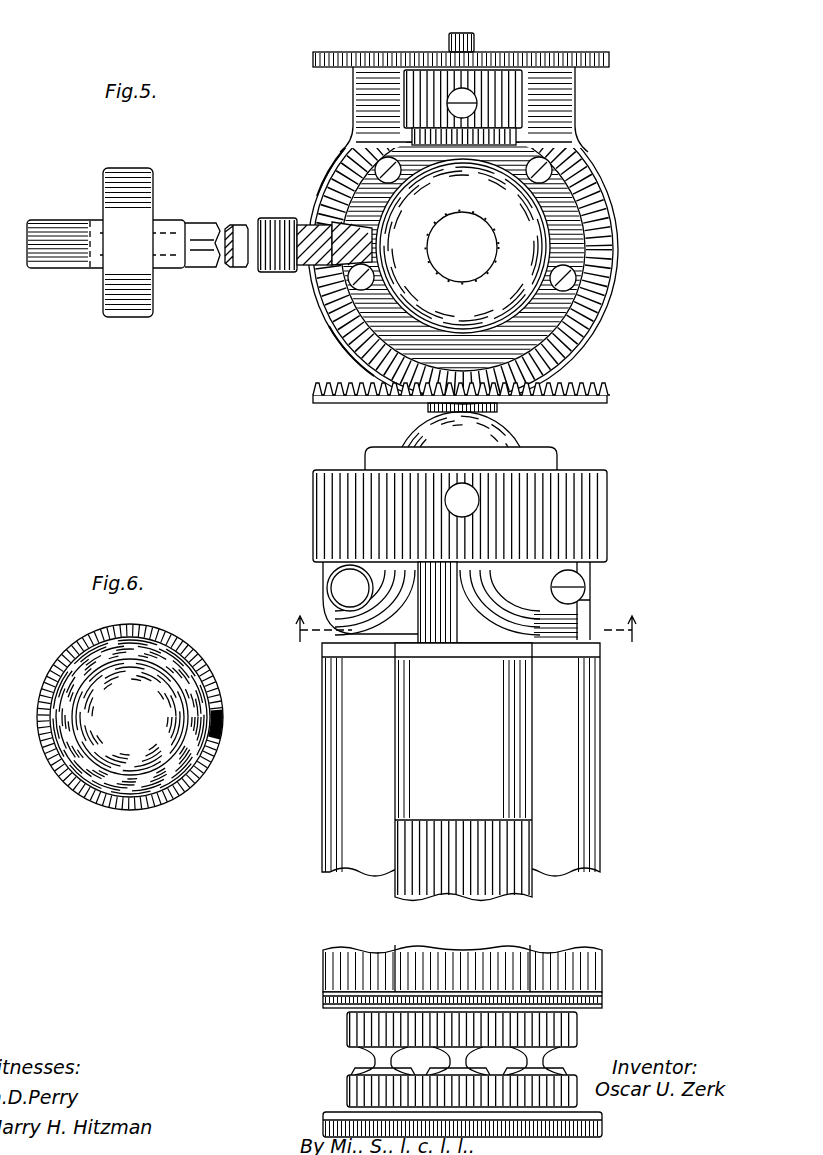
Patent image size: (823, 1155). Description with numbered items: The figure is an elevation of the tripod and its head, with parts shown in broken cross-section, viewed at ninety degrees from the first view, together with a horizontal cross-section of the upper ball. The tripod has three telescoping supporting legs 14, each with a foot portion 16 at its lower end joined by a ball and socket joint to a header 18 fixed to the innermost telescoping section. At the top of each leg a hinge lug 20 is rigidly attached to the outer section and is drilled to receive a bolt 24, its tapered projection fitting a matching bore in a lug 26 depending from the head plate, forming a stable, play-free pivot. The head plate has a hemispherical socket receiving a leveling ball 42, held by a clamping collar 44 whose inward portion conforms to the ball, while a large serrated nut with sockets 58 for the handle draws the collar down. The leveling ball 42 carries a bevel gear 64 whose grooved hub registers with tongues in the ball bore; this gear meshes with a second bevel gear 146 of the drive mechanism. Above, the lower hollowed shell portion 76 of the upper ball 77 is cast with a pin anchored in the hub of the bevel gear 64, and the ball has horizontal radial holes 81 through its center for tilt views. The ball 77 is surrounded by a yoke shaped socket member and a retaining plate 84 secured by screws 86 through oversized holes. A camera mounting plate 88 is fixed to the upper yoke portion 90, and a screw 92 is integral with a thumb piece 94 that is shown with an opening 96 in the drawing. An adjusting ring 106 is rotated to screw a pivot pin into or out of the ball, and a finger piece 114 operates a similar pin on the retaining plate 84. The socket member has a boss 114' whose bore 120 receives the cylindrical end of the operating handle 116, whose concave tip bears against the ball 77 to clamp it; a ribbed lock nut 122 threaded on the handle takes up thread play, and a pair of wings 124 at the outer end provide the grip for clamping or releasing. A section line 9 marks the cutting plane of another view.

In FIG. 5, the telescoping supporting leg 14 is at (588, 766).
In FIG. 5, the foot portion 16 is at (583, 1112).
In FIG. 5, the header 18 is at (356, 1027).
In FIG. 5, the hinge lug 20 is at (425, 614).
In FIG. 5, the bolt 24 is at (586, 583).
In FIG. 5, the lug 26 is at (382, 576).
In FIG. 5, the leveling ball 42 is at (503, 440).
In FIG. 5, the clamping collar 44 is at (552, 462).
In FIG. 5, the socket 58 is at (455, 496).
In FIG. 5, the bevel gear 64 is at (607, 401).
In FIG. 6, the lower hollowed shell portion 76 is at (222, 733).
In FIG. 5, the upper ball 77 is at (362, 247).
In FIG. 6, the radial hole 81 is at (222, 722).
In FIG. 5, the retaining plate 84 is at (606, 212).
In FIG. 5, the screw 86 is at (578, 280).
In FIG. 5, the camera mounting plate 88 is at (578, 58).
In FIG. 5, the upper yoke portion 90 is at (566, 96).
In FIG. 5, the screw 92 is at (474, 45).
In FIG. 5, the thumb piece 94 is at (500, 80).
In FIG. 5, the hole 96 is at (474, 105).
In FIG. 5, the adjusting ring 106 is at (445, 103).
In FIG. 5, the finger piece 114 is at (463, 246).
In FIG. 5, the boss 114' is at (298, 216).
In FIG. 5, the operating handle 116 is at (237, 270).
In FIG. 5, the bore 120 is at (343, 170).
In FIG. 5, the lock nut 122 is at (275, 273).
In FIG. 5, the wing 124 is at (138, 305).
In FIG. 5, the bevel gear 146 is at (356, 342).
In FIG. 5, the section line 9 is at (463, 629).